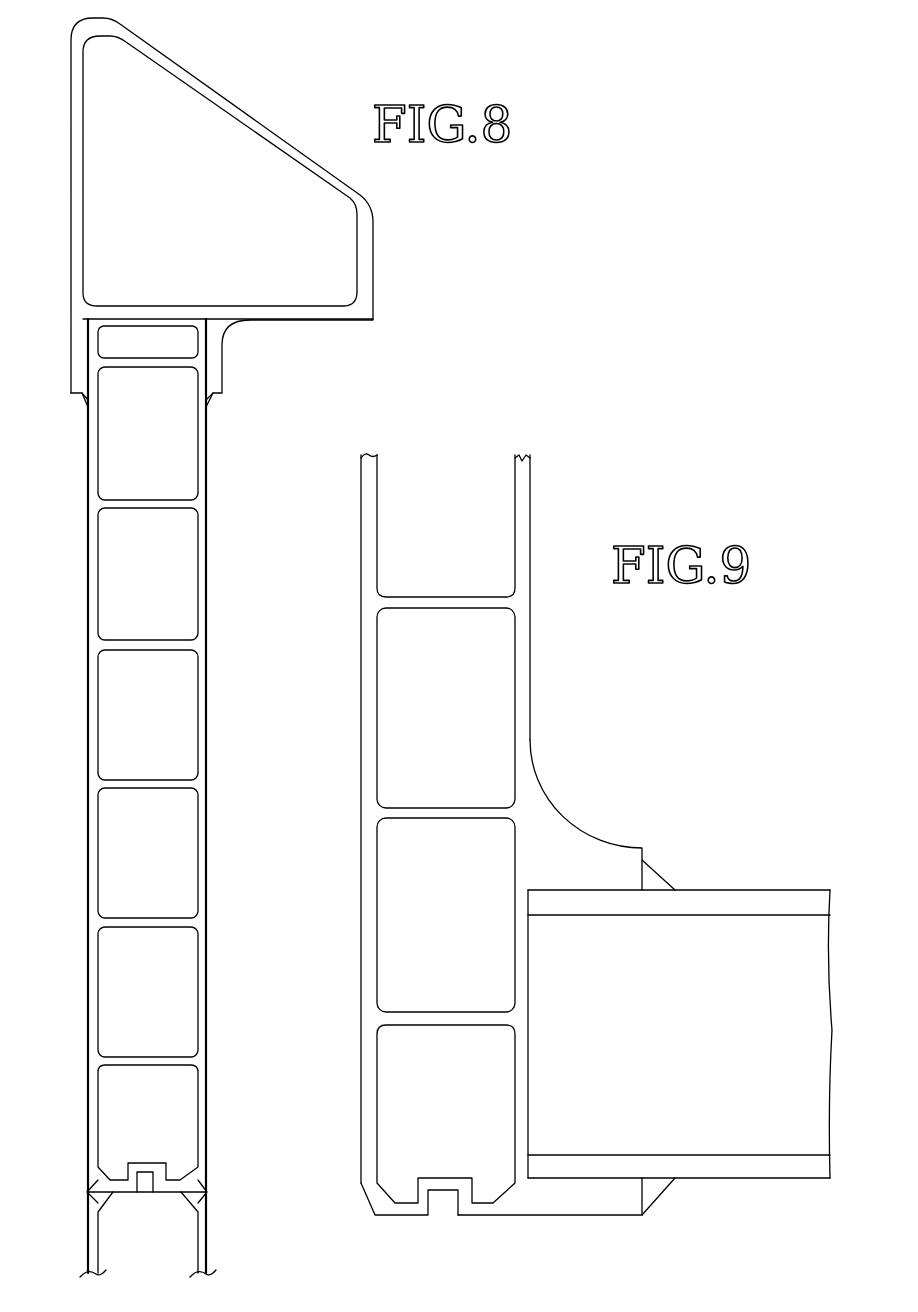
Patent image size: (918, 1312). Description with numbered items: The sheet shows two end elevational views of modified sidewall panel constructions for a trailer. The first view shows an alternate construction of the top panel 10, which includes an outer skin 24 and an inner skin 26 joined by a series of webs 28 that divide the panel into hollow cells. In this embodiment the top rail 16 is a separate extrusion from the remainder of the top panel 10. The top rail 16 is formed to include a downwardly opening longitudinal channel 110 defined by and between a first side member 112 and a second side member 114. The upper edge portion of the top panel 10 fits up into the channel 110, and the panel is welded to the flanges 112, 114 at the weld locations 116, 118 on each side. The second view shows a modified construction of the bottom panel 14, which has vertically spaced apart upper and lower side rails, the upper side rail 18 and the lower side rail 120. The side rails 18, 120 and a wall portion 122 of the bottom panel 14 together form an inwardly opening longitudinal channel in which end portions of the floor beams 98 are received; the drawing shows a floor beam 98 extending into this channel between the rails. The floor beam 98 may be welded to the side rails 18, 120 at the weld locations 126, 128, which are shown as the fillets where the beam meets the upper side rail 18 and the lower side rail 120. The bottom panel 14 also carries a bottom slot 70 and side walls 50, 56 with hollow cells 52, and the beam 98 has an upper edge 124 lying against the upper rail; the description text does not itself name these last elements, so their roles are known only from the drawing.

In FIG. 8, the top panel 10 is at (206, 798).
In FIG. 9, the bottom panel 14 is at (564, 839).
In FIG. 8, the top rail 16 is at (293, 131).
In FIG. 9, the upper side rail 18 is at (588, 852).
In FIG. 8, the outer skin 24 is at (87, 820).
In FIG. 8, the inner skin 26 is at (208, 848).
In FIG. 8, the webs 28 is at (160, 370).
In FIG. 9, the rail wall 50 is at (527, 692).
In FIG. 9, the hollow cells 52 is at (457, 610).
In FIG. 9, the rail wall 56 is at (361, 715).
In FIG. 9, the slot 70 is at (412, 1217).
In FIG. 9, the floor beams 98 is at (680, 1034).
In FIG. 8, the longitudinal channel 110 is at (150, 325).
In FIG. 8, the side member 112 is at (78, 352).
In FIG. 8, the side member 114 is at (223, 368).
In FIG. 8, the weld 116 is at (82, 403).
In FIG. 8, the weld 118 is at (213, 403).
In FIG. 9, the lower side rail 120 is at (580, 1207).
In FIG. 9, the wall portion 122 is at (528, 1077).
In FIG. 9, the panel top edge 124 is at (592, 897).
In FIG. 9, the weld 126 is at (665, 877).
In FIG. 9, the weld 128 is at (668, 1192).